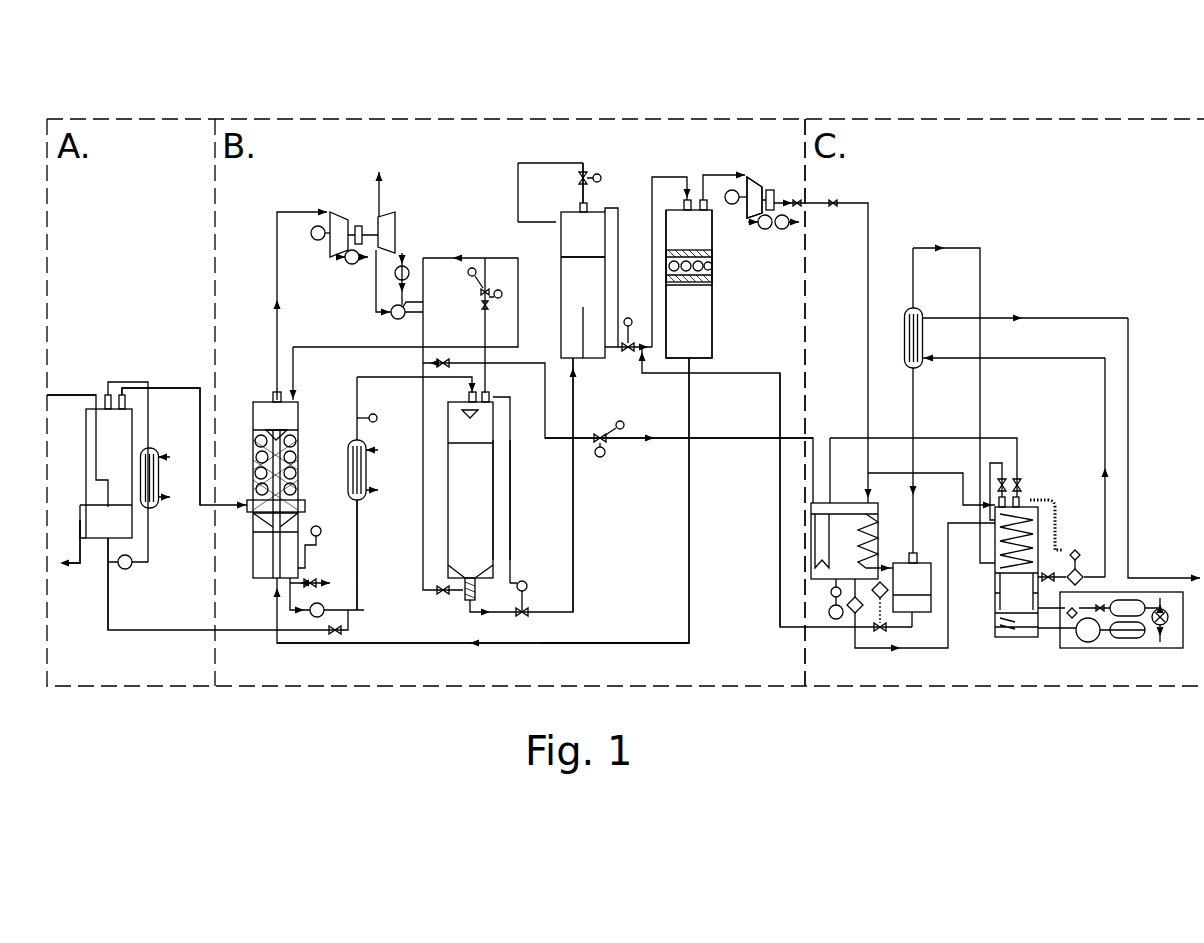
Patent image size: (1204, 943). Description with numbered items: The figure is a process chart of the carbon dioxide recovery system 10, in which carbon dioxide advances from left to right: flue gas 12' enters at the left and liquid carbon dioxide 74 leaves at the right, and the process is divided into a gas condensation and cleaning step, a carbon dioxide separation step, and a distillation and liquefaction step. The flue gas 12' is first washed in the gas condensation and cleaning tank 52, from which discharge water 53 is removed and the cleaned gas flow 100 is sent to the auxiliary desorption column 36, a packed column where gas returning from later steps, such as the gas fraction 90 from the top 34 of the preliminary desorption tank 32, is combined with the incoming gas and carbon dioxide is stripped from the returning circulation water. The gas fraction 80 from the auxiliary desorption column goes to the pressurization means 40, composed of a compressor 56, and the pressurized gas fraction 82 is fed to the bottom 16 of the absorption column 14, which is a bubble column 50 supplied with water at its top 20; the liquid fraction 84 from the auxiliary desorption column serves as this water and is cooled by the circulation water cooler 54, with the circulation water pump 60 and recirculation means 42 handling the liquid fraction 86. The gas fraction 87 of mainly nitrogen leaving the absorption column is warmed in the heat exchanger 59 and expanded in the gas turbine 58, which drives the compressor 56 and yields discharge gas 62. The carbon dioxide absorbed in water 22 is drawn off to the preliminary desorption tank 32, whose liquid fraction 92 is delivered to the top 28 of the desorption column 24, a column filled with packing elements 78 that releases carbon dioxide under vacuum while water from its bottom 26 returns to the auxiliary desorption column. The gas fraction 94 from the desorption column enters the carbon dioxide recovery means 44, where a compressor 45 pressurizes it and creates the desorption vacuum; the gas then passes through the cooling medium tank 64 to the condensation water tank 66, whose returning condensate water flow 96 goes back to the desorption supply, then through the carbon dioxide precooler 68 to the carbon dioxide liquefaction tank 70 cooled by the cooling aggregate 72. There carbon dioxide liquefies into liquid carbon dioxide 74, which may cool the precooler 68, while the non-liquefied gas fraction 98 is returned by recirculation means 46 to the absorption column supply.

The system 10 is at (775, 58).
The flue gas 12' is at (94, 431).
The absorption column 14 is at (484, 487).
The absorption column bottom 16 is at (500, 531).
The absorption column top 20 is at (522, 398).
The carbon dioxide absorbed in water 22 is at (573, 560).
The desorption column 24 is at (700, 342).
The desorption column bottom 26 is at (724, 330).
The desorption column top 28 is at (722, 236).
The preliminary desorption tank 32 is at (544, 282).
The preliminary desorption tank top 34 is at (518, 200).
The auxiliary desorption column 36 is at (258, 430).
The pressurization means 40 is at (356, 182).
The recirculation means 42 is at (332, 650).
The carbon dioxide recovery means 44 is at (1003, 150).
The compressor 45 is at (758, 152).
The recirculation means 46 is at (601, 138).
The bubble column 50 is at (490, 505).
The gas condensation and cleaning tank 52 is at (110, 362).
The discharge water 53 is at (80, 545).
The circulation water cooler 54 is at (155, 500).
The compressor 56 is at (335, 240).
The gas turbine 58 is at (396, 222).
The heat exchanger 59 is at (392, 313).
The circulation water pump 60 is at (318, 617).
The discharge gas 62 is at (381, 190).
The cooling medium tank 64 is at (850, 530).
The condensation water tank 66 is at (925, 608).
The carbon dioxide precooler 68 is at (903, 340).
The carbon dioxide liquefaction tank 70 is at (1025, 505).
The cooling aggregate 72 is at (1088, 640).
The liquid carbon dioxide 74 is at (1145, 578).
The packing element 78 is at (603, 452).
The gas fraction discharged from the auxiliary desorption 80 is at (277, 265).
The pressurized gas fraction supplied to the absorption column 82 is at (420, 470).
The liquid fraction discharged from the auxiliary desorption column 84 is at (362, 575).
The liquid fraction discharged from the auxiliary desorption column 86 is at (598, 633).
The gas fraction discharged from the absorption column 87 is at (482, 335).
The gas fraction discharged from the preliminary desorption tank 90 is at (553, 222).
The liquid fraction discharged from the preliminary desorption tank 92 is at (652, 300).
The gas fraction discharged from the desorption column 94 is at (718, 172).
The returning condensate water flow 96 is at (778, 395).
The non-liquefied gas fraction from carbon dioxide liquefaction 98 is at (668, 437).
The cleaned gas flow 100 is at (180, 385).